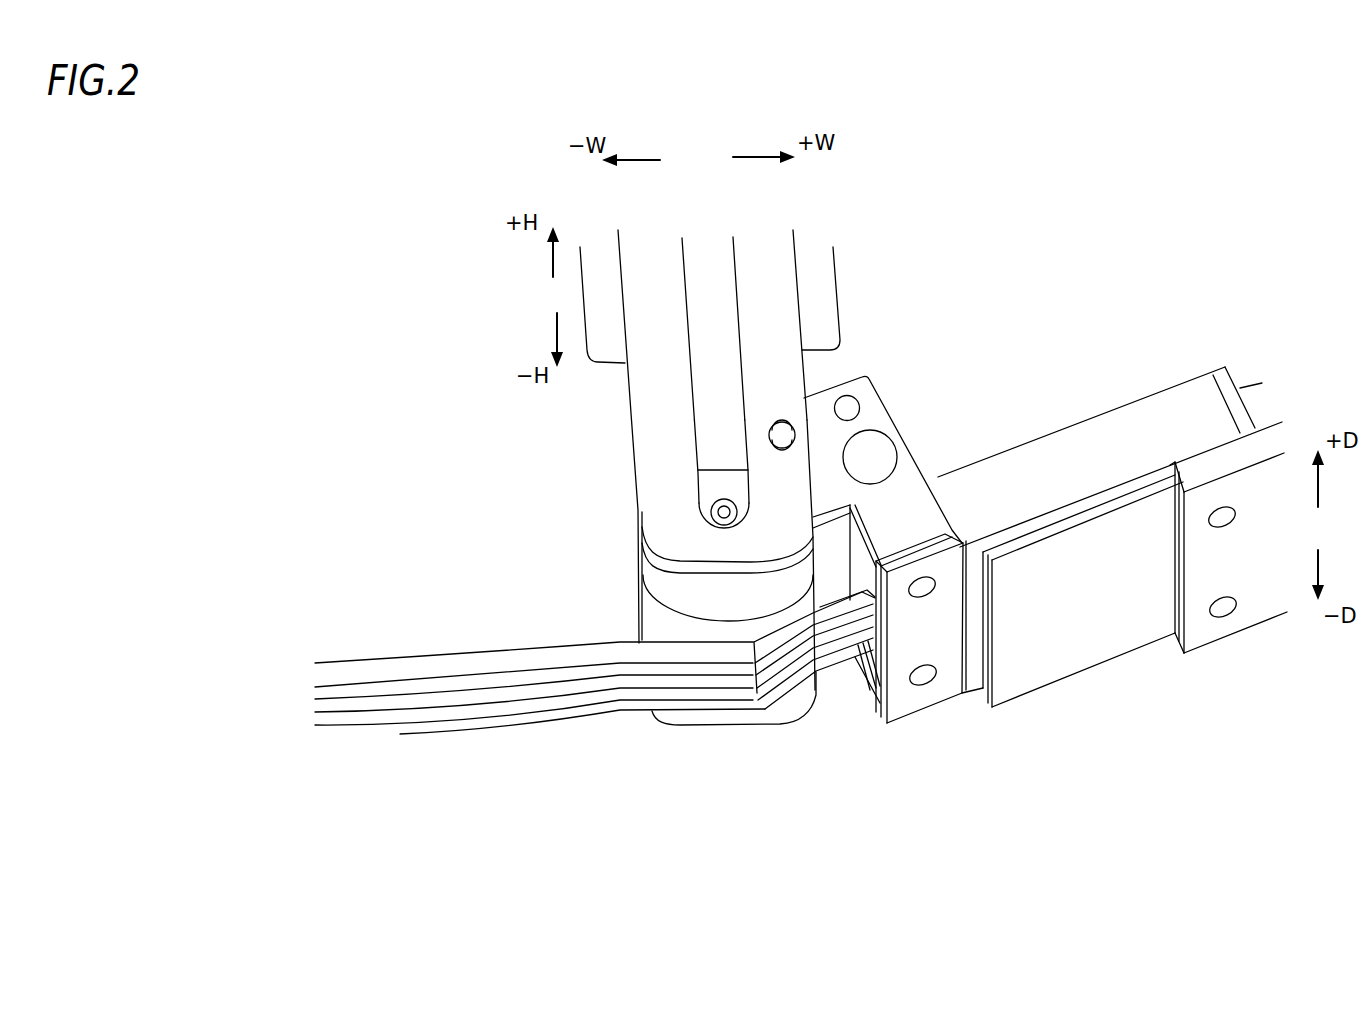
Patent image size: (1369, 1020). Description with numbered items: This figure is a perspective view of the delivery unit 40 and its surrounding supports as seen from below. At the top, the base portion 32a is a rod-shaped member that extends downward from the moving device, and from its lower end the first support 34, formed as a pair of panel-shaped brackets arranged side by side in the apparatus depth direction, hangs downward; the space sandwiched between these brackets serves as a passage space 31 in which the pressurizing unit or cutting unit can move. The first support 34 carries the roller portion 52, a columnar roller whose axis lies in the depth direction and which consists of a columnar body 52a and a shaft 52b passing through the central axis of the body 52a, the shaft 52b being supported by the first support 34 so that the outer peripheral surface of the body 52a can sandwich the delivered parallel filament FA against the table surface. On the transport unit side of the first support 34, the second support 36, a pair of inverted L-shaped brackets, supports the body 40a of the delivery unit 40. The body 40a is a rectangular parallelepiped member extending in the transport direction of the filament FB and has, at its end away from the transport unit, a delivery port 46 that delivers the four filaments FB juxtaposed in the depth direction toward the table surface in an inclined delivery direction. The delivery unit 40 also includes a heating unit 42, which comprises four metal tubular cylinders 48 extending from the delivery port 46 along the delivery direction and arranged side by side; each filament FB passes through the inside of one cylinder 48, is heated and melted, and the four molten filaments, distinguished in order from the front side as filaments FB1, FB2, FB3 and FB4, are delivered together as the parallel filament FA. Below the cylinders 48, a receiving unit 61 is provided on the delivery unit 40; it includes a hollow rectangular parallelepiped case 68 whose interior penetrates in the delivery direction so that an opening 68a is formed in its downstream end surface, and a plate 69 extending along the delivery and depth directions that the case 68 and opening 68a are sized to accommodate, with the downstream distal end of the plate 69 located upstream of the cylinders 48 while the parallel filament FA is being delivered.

The passage space 31 is at (760, 580).
The base portion 32a is at (822, 283).
The first support 34 is at (648, 428).
The second support 36 is at (885, 420).
The delivery unit 40 is at (1110, 394).
The body 40a is at (1145, 417).
The heating unit 42 is at (838, 660).
The delivery port 46 is at (868, 697).
The cylinder 48 is at (845, 647).
The roller portion 52 is at (644, 520).
The body 52a is at (658, 582).
The shaft 52b is at (700, 512).
The receiving unit 61 is at (1135, 629).
The case 68 is at (1235, 605).
The opening 68a is at (1168, 625).
The plate 69 is at (1095, 645).
The parallel filament FA is at (357, 640).
The filament FB is at (507, 663).
The filament FB1 is at (323, 675).
The filament FB2 is at (323, 693).
The filament FB3 is at (323, 705).
The filament FB4 is at (323, 717).